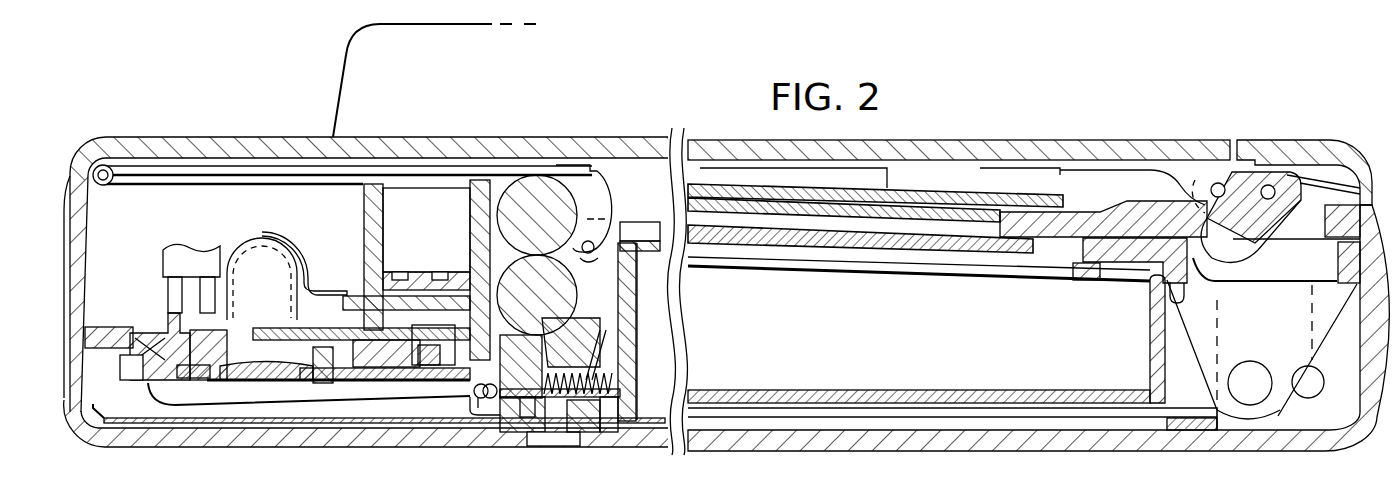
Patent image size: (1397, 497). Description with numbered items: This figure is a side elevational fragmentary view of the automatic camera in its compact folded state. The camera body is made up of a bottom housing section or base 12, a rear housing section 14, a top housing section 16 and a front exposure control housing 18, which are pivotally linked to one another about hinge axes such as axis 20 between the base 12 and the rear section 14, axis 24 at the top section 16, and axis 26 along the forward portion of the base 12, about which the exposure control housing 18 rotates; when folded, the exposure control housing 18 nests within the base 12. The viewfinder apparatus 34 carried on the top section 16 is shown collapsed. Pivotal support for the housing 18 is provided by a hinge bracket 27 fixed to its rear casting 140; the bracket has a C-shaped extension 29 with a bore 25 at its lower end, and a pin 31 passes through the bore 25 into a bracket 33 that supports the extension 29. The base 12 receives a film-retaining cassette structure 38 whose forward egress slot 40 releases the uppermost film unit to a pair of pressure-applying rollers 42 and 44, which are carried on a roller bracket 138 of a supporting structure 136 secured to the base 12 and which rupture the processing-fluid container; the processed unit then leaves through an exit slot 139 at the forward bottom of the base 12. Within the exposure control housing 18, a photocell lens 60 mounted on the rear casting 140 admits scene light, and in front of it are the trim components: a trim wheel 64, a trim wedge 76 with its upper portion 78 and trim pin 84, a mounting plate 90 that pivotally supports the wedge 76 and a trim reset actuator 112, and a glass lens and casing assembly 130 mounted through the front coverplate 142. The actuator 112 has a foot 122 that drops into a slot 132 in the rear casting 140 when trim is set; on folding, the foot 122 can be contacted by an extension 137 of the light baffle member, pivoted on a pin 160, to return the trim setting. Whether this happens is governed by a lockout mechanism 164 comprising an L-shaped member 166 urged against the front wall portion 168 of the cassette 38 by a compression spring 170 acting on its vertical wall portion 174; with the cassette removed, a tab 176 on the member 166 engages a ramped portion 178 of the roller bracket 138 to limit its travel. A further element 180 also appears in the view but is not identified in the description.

The bottom housing section 12 is at (1270, 450).
The rear housing section 14 is at (988, 150).
The top housing section 16 is at (280, 133).
The front exposure control housing 18 is at (240, 128).
The hinge axis 20 is at (1215, 172).
The hinge axis 24 is at (108, 165).
The bore 25 is at (588, 254).
The hinge axis 26 is at (612, 253).
The hinge bracket 27 is at (372, 150).
The C-shaped extension 29 is at (594, 186).
The pin 31 is at (600, 258).
The bracket 33 is at (622, 229).
The viewfinder apparatus 34 is at (338, 72).
The film-retaining cassette structure 38 is at (1030, 400).
The egress opening or slot 40 is at (668, 320).
The pressure-applying roller 42 is at (546, 220).
The pressure-applying roller 44 is at (546, 300).
The photocell lens 60 is at (284, 260).
The trim wheel 64 is at (157, 391).
The trim wedge 76 is at (395, 333).
The upper portion of trim wedge 78 is at (306, 332).
The trim reset plate pin 84 is at (376, 380).
The mounting plate 90 is at (352, 385).
The trim reset plate 112 is at (422, 385).
The foot portion 122 is at (455, 362).
The glass lens and casing assembly 130 is at (280, 368).
The slot 132 is at (512, 348).
The supporting structure 136 is at (630, 340).
The extension 137 is at (476, 380).
The roller bracket 138 is at (620, 440).
The exit slot 139 is at (132, 440).
The rear casting 140 is at (470, 228).
The front coverplate 142 is at (209, 399).
The pin 160 is at (490, 440).
The trim assembly return preventing mechanism 164 is at (560, 421).
The L-shaped member 166 is at (592, 435).
The front wall portion 168 is at (630, 357).
The compression spring 170 is at (628, 390).
The vertical wall portion 174 is at (628, 378).
The tab 176 is at (541, 402).
The ramped portion 178 is at (528, 418).
The coil 180 is at (478, 418).